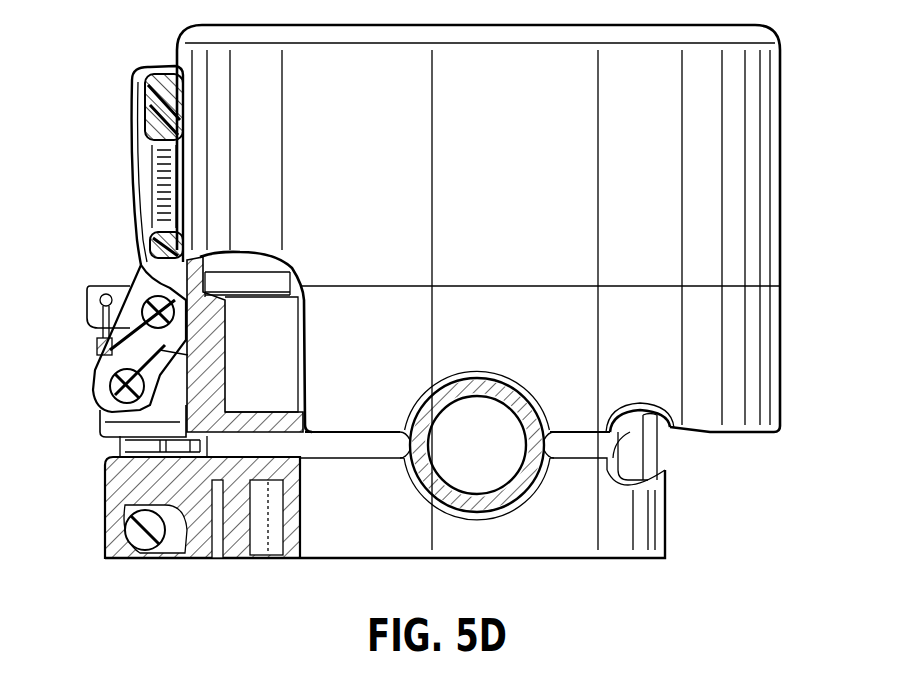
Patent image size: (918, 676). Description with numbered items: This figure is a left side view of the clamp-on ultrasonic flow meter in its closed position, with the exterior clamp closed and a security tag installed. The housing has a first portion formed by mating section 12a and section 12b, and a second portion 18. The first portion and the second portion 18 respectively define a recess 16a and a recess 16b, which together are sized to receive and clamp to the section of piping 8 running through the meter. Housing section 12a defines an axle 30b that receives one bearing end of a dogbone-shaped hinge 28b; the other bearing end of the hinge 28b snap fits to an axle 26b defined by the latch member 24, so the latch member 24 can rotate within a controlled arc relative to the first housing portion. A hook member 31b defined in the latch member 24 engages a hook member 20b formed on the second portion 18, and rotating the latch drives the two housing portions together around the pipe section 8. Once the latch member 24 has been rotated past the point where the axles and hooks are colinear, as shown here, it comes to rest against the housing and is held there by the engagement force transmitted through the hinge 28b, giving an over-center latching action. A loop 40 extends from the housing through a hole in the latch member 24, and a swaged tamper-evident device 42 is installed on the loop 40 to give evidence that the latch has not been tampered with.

The piping 8 is at (438, 472).
The housing section 12a is at (780, 113).
The housing section 12b is at (780, 322).
The recess 16a is at (524, 396).
The recess 16b is at (527, 490).
The second portion 18 is at (625, 559).
The hook member 20b is at (105, 513).
The latch member 24 is at (158, 187).
The axle 26b is at (180, 318).
The hinge 28b is at (170, 350).
The axle 30b is at (93, 390).
The hook member 31b is at (150, 552).
The loop 40 is at (98, 290).
The swaged tamper-evident device 42 is at (97, 343).